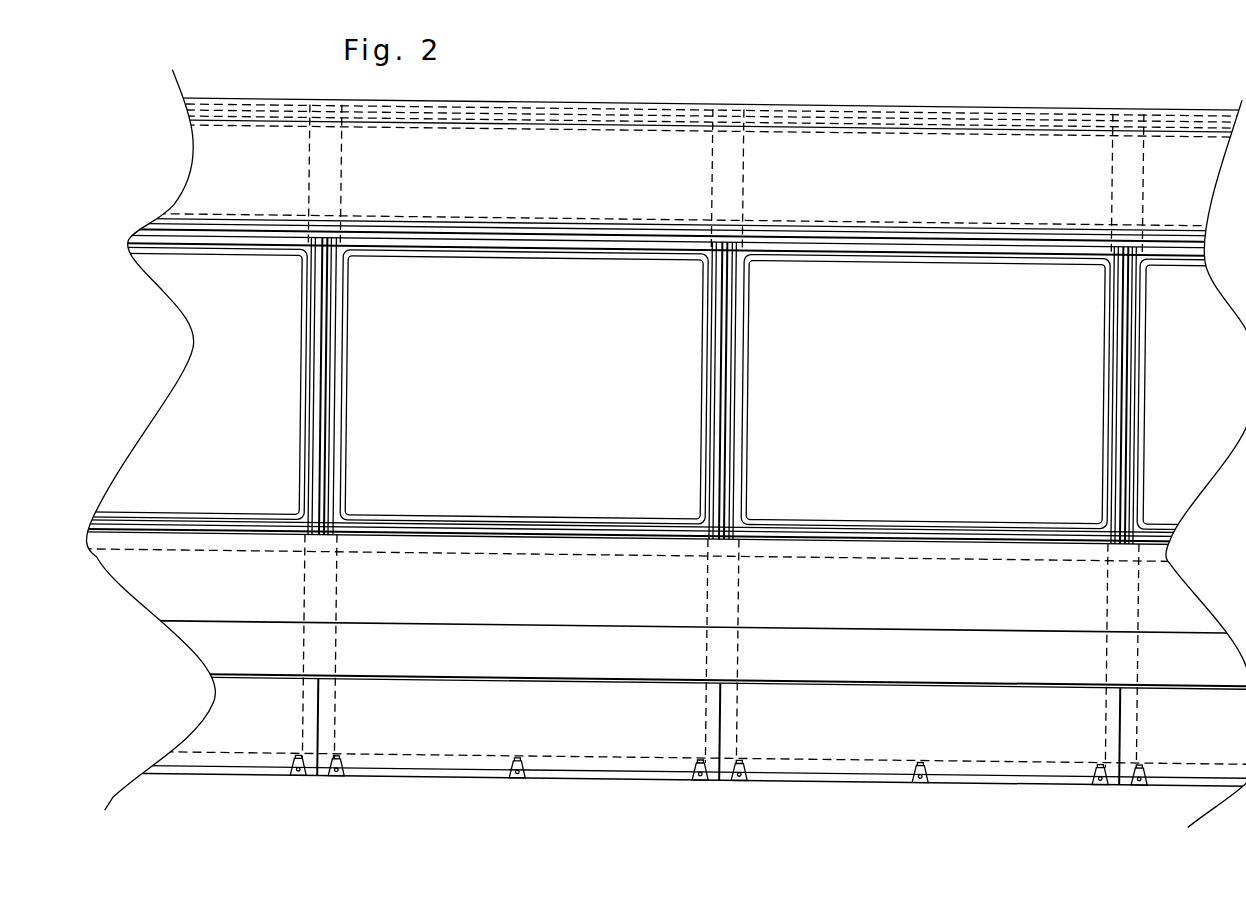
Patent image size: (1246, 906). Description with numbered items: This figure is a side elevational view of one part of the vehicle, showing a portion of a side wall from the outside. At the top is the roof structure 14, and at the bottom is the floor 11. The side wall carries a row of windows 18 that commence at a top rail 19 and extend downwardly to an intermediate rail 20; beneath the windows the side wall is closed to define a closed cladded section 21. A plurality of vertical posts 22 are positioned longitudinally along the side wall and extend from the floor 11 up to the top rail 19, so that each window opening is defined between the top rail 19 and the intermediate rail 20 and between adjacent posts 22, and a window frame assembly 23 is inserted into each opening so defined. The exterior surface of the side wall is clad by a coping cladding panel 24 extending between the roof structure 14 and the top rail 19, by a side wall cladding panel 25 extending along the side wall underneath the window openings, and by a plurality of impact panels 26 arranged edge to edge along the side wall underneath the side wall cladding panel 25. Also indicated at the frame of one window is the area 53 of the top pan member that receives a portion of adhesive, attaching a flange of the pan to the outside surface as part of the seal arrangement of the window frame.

The floor 11 is at (266, 772).
The roof structure 14 is at (578, 90).
The windows 18 is at (473, 360).
The top rail 19 is at (538, 228).
The intermediate rail 20 is at (515, 514).
The closed cladded section 21 is at (453, 615).
The vertical posts 22 is at (326, 593).
The window frame assembly 23 is at (358, 303).
The coping cladding panel 24 is at (861, 139).
The side wall cladding panel 25 is at (582, 602).
The impact panels 26 is at (479, 719).
The area for receiving adhesive 53 is at (744, 464).